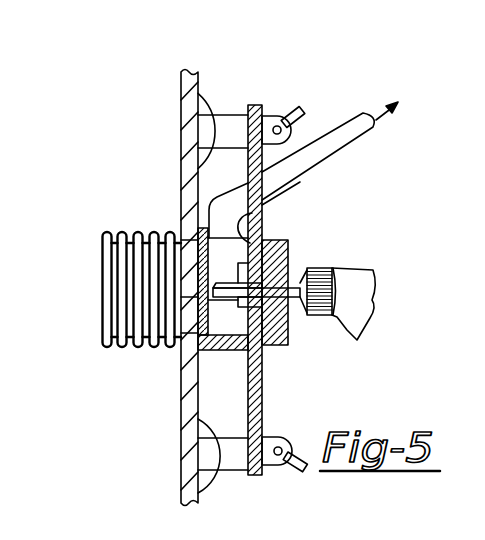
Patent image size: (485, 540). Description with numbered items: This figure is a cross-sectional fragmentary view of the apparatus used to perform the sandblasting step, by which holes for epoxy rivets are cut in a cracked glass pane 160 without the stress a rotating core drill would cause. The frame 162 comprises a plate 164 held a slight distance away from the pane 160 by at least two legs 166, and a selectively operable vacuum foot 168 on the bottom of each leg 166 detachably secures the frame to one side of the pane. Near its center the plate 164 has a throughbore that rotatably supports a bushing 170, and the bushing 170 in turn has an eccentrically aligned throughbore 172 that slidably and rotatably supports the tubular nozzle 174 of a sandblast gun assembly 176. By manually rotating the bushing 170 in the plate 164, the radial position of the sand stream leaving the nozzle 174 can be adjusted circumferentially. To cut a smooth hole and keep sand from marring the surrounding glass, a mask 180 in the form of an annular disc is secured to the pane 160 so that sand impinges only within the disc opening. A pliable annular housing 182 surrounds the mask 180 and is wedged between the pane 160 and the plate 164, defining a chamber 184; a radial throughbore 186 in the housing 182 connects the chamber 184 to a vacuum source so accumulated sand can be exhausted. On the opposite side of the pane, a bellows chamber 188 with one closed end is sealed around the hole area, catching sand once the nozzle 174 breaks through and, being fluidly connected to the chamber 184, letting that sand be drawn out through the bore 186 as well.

The glass pane 160 is at (182, 96).
The frame 162 is at (268, 98).
The plate 164 is at (266, 206).
The leg 166 is at (231, 114).
The vacuum foot 168 is at (210, 105).
The bushing 170 is at (288, 250).
The eccentrically aligned throughbore 172 is at (305, 268).
The tubular nozzle 174 is at (291, 348).
The sandblast gun assembly 176 is at (345, 270).
The mask 180 is at (200, 250).
The pliable annular housing 182 is at (220, 322).
The chamber 184 is at (210, 350).
The radial throughbore 186 is at (266, 210).
The bellows chamber 188 is at (103, 254).